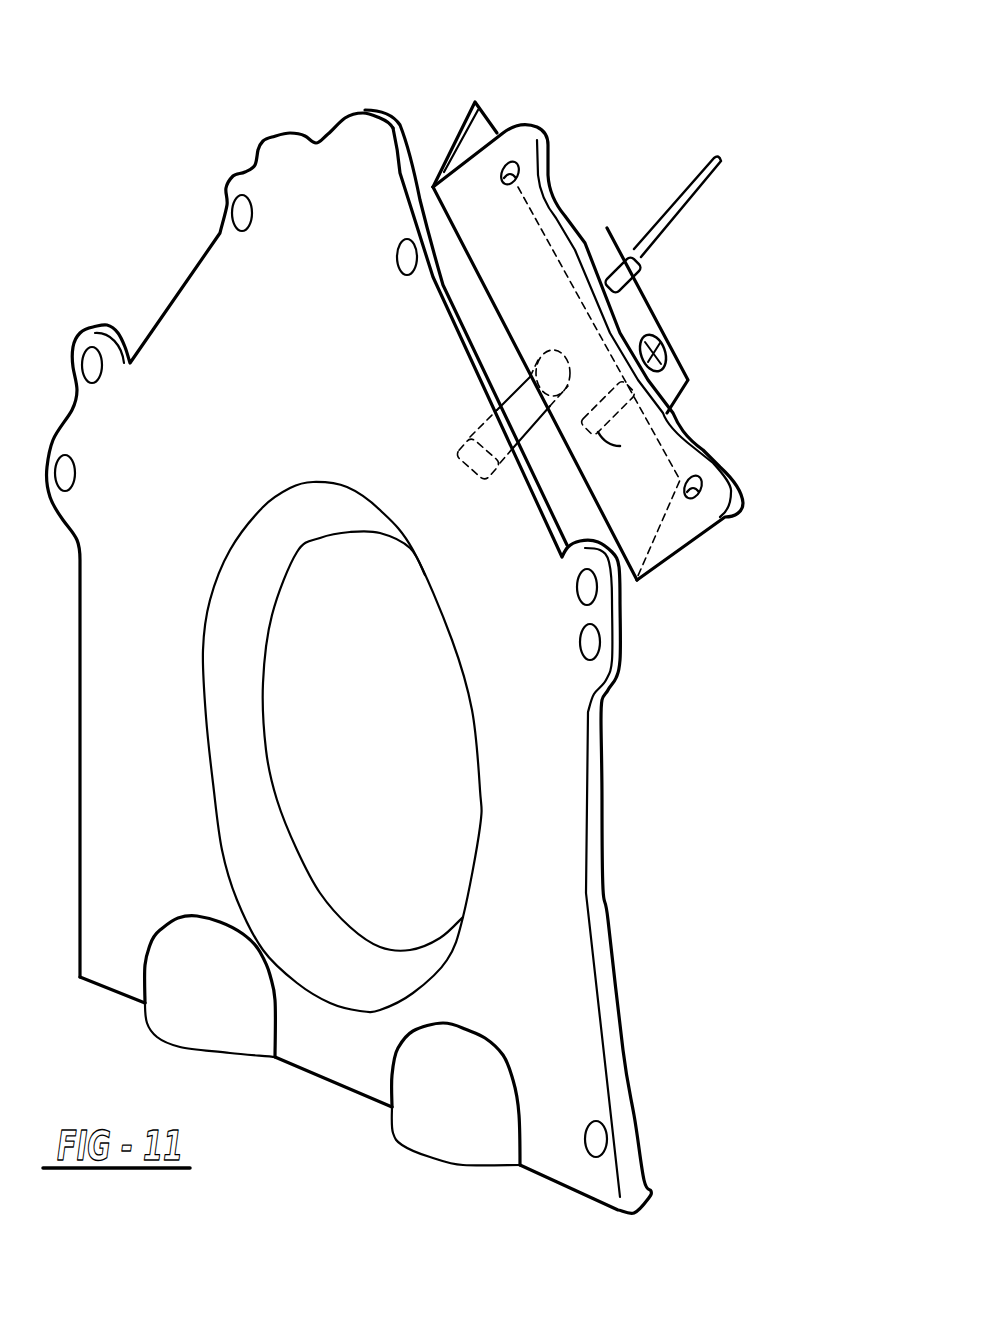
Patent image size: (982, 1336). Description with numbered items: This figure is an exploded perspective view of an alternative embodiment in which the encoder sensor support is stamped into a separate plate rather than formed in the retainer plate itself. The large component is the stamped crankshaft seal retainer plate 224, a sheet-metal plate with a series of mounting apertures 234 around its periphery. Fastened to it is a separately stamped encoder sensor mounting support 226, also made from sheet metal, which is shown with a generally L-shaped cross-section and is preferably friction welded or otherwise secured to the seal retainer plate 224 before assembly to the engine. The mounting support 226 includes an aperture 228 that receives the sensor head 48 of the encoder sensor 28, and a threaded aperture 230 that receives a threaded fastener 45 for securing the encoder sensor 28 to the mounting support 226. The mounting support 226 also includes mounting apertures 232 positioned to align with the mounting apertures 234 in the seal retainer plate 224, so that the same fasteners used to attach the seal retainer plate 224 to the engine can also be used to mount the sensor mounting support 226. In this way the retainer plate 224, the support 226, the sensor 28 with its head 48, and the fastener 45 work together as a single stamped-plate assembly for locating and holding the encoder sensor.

The stamped crankshaft seal retainer plate 224 is at (222, 310).
The stamped encoder sensor mounting support 226 is at (560, 230).
The aperture 228 is at (554, 350).
The threaded aperture 230 is at (605, 438).
The mounting apertures 232 is at (516, 170).
The mounting apertures 234 is at (397, 263).
The encoder sensor 28 is at (637, 308).
The threaded fastener 45 is at (665, 347).
The sensor head 48 is at (487, 457).